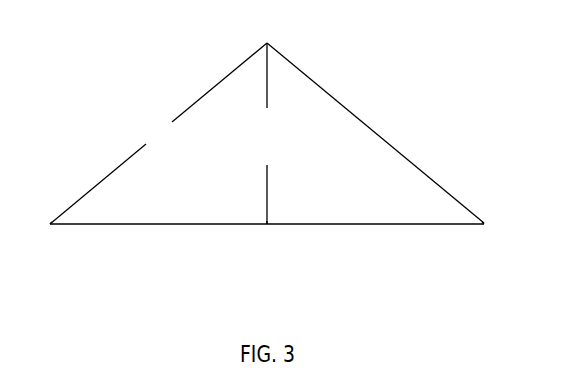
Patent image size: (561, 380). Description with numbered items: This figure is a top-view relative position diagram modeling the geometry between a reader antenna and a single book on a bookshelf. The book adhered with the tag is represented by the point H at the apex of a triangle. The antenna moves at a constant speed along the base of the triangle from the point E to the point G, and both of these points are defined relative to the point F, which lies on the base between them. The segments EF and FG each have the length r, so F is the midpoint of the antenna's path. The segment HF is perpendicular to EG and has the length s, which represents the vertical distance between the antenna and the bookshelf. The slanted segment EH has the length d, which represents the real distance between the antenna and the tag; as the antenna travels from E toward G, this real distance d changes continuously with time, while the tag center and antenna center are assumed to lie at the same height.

The book adhered with the tag H is at (370, 111).
The point E is at (45, 247).
The point F is at (266, 247).
The point G is at (490, 248).
The real distance between the antenna and the tag d is at (158, 133).
The vertical distance between the antenna and the bookshelf s is at (266, 133).
The length of EF and FG r is at (267, 245).